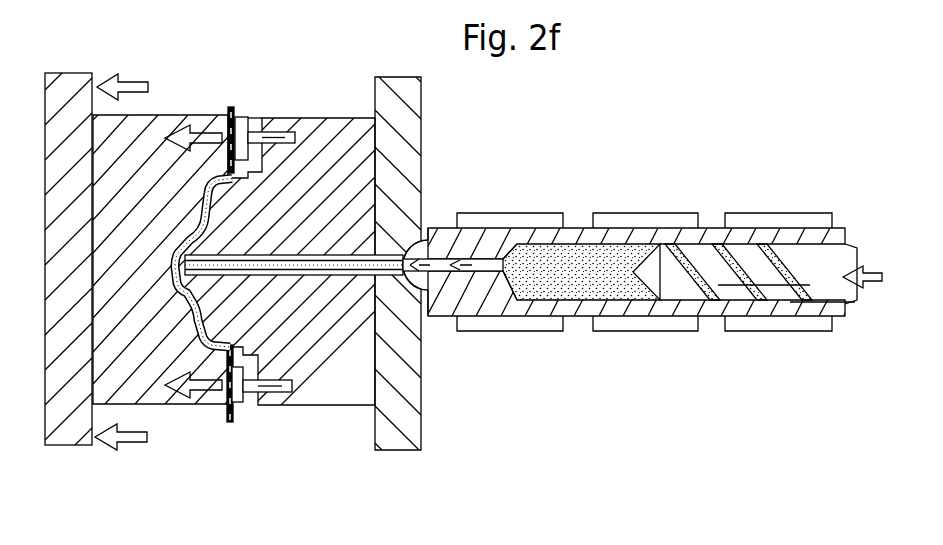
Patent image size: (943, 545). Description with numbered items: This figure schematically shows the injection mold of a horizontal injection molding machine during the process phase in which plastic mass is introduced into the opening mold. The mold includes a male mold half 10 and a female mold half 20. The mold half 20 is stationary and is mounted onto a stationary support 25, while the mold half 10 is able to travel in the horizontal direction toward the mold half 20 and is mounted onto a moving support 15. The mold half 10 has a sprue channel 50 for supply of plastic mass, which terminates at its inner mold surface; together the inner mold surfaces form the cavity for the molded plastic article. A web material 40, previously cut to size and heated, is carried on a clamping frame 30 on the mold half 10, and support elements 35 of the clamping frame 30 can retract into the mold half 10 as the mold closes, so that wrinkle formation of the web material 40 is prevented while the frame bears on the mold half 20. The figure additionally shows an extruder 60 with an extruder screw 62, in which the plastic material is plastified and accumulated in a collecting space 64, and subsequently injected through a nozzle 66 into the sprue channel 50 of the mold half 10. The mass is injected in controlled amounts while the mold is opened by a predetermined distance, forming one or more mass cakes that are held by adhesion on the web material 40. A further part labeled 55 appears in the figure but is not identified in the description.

The mold half (male mold) 10 is at (333, 135).
The moving support 15 is at (412, 392).
The mold half (female mold) 20 is at (145, 393).
The stationary support 25 is at (63, 408).
The clamping frame 30 is at (235, 408).
The support elements 35 is at (277, 396).
The web material 40 is at (231, 107).
The sprue channel 50 is at (355, 247).
The molded part 55 is at (170, 250).
The extruder 60 is at (707, 320).
The extruder screw 62 is at (846, 264).
The collecting space 64 is at (592, 326).
The nozzle 66 is at (447, 296).